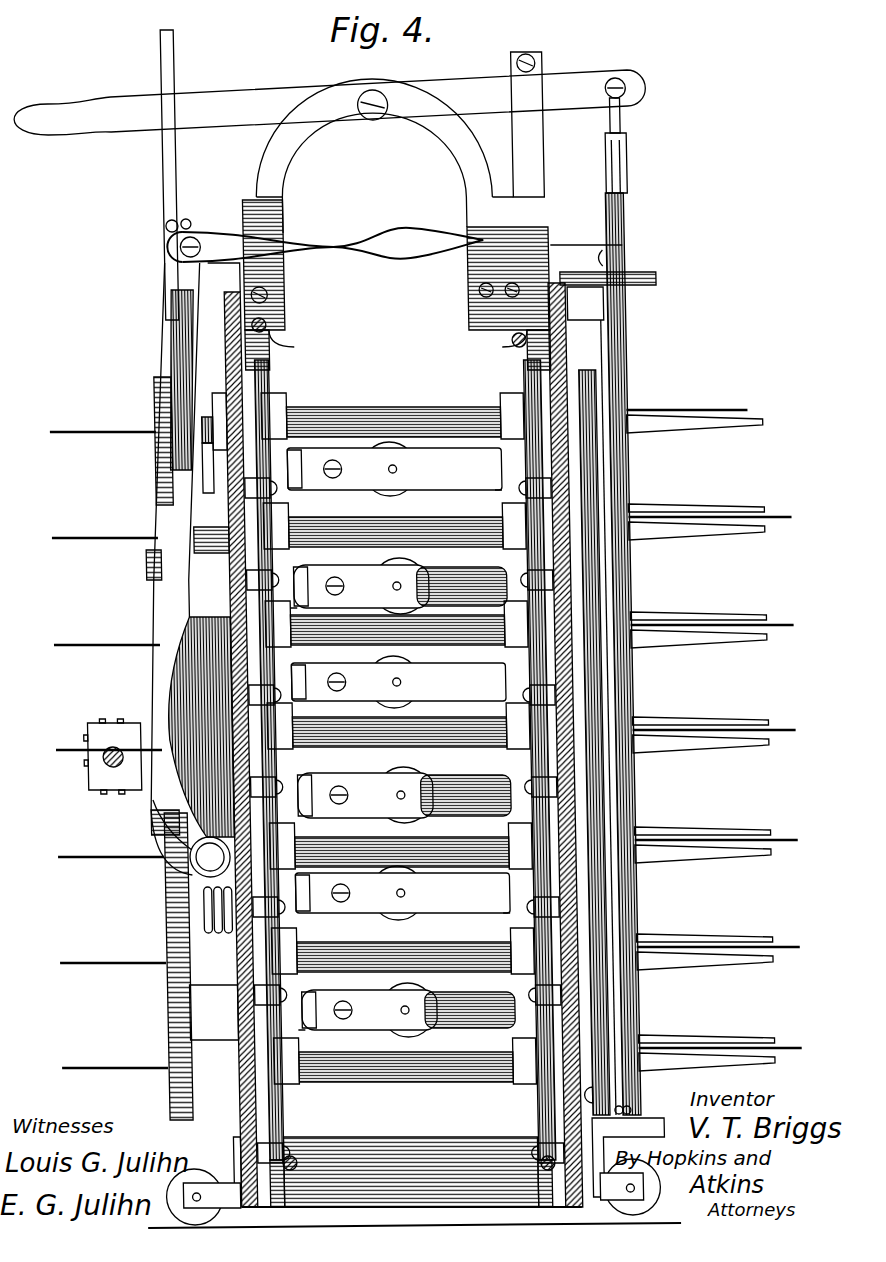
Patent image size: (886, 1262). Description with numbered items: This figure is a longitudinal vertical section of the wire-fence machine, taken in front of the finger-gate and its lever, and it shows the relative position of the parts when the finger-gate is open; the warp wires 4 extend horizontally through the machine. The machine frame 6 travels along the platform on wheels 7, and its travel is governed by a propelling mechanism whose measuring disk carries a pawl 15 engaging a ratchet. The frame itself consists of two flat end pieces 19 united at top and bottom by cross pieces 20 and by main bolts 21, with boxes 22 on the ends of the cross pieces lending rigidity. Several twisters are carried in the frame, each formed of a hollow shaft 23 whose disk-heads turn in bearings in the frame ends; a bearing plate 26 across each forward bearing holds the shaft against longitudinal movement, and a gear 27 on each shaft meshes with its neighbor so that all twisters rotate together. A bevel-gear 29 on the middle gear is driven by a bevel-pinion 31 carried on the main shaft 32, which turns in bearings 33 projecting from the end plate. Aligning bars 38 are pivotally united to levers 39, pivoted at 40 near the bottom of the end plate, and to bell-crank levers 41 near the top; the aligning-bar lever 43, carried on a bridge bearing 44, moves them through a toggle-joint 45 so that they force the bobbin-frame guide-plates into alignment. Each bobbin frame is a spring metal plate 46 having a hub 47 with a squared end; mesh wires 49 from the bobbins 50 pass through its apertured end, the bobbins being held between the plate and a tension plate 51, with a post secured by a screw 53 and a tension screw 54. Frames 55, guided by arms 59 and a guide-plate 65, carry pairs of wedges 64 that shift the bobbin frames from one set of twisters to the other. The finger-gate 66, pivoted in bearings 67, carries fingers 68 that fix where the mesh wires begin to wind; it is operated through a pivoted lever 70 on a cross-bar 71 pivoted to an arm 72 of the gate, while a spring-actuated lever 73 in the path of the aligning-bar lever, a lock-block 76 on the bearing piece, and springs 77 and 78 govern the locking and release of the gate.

The rod 4 is at (423, 732).
The frame 6 is at (411, 1136).
The wheels 7 is at (652, 1190).
The pawl 15 is at (208, 486).
The end pieces 19 is at (233, 372).
The cross pieces 20 is at (404, 703).
The main bolts 21 is at (522, 336).
The boxes 22 is at (228, 1145).
The hollow shaft 23 is at (405, 400).
The bearing plate 26 is at (219, 428).
The gear 27 is at (160, 497).
The bevel-gear 29 is at (150, 828).
The bevel-pinion 31 is at (122, 722).
The shaft 32 is at (107, 766).
The bearings 33 is at (201, 727).
The aligning bars 38 is at (603, 382).
The levers 39 is at (600, 1093).
The pivot 40 is at (622, 1100).
The bell-crank levers 41 is at (634, 350).
The lever 43 is at (329, 102).
The bridge bearing 44 is at (383, 120).
The toggle-joint 45 is at (633, 104).
The spring metal plate 46 is at (399, 739).
The hub 47 is at (313, 739).
The mesh wires 49 is at (462, 562).
The bobbins 50 is at (399, 739).
The tension plate 51 is at (413, 801).
The screw 53 is at (347, 687).
The screw 54 is at (350, 802).
The frames 55 is at (531, 362).
The arms 59 is at (500, 490).
The wedges 64 is at (404, 820).
The guide-plate 65 is at (290, 516).
The finger-gate 66 is at (614, 300).
The bearings 67 is at (655, 276).
The fingers 68 is at (725, 425).
The pivoted lever 70 is at (176, 569).
The cross-bar 71 is at (325, 242).
The arm 72 is at (586, 258).
The lever 73 is at (183, 72).
The lock-block 76 is at (176, 770).
The spring 77 is at (208, 837).
The spring 78 is at (200, 930).